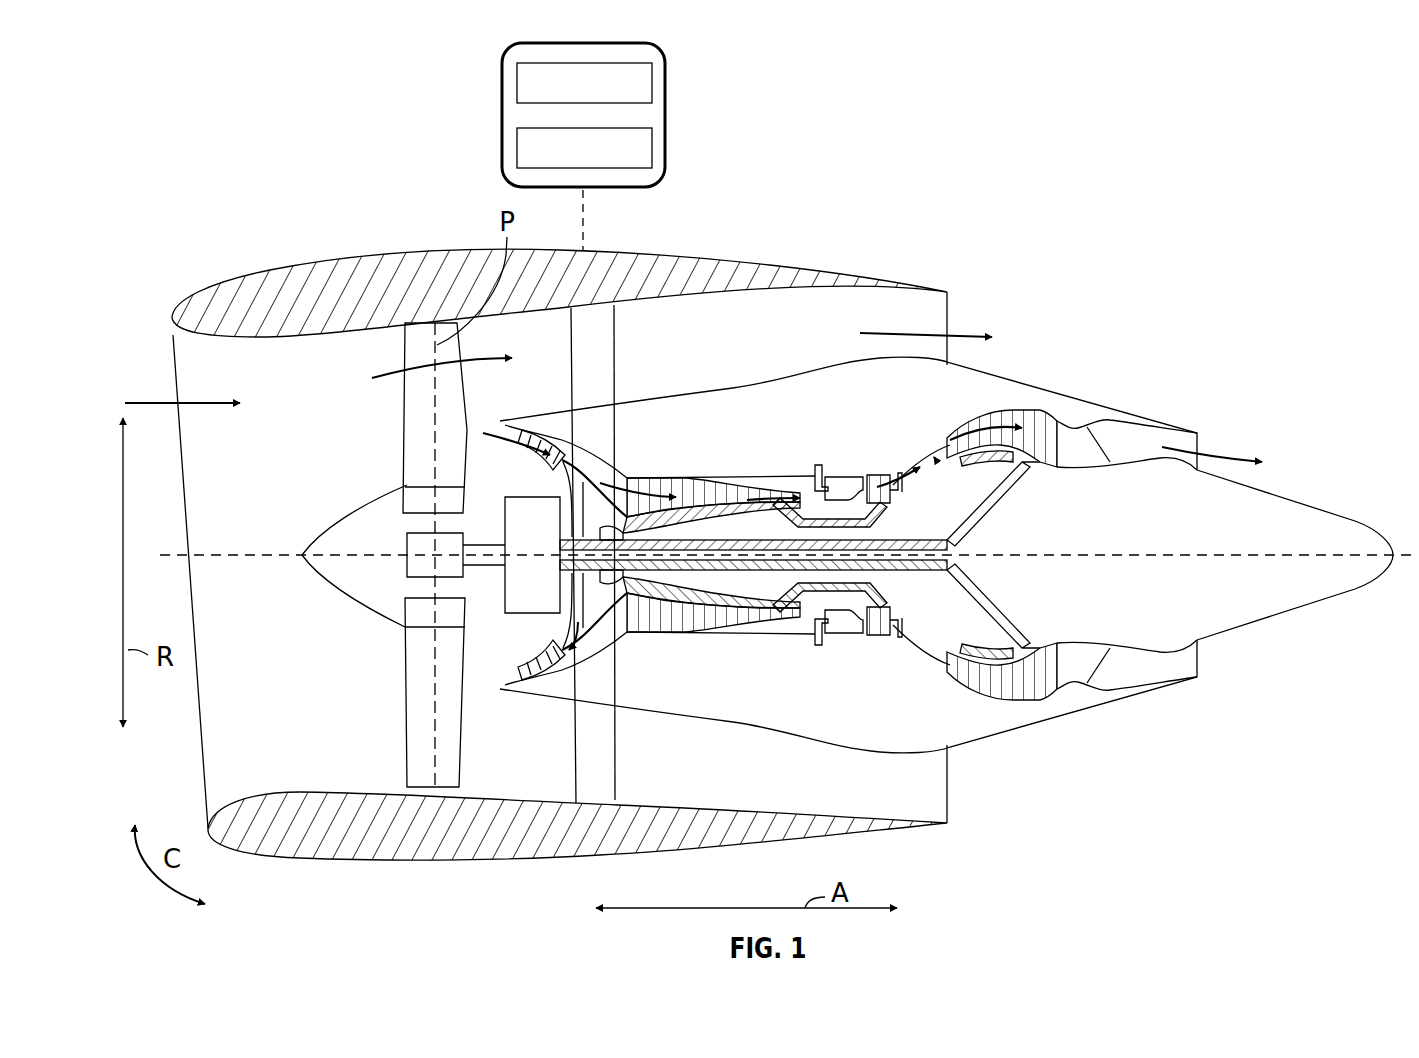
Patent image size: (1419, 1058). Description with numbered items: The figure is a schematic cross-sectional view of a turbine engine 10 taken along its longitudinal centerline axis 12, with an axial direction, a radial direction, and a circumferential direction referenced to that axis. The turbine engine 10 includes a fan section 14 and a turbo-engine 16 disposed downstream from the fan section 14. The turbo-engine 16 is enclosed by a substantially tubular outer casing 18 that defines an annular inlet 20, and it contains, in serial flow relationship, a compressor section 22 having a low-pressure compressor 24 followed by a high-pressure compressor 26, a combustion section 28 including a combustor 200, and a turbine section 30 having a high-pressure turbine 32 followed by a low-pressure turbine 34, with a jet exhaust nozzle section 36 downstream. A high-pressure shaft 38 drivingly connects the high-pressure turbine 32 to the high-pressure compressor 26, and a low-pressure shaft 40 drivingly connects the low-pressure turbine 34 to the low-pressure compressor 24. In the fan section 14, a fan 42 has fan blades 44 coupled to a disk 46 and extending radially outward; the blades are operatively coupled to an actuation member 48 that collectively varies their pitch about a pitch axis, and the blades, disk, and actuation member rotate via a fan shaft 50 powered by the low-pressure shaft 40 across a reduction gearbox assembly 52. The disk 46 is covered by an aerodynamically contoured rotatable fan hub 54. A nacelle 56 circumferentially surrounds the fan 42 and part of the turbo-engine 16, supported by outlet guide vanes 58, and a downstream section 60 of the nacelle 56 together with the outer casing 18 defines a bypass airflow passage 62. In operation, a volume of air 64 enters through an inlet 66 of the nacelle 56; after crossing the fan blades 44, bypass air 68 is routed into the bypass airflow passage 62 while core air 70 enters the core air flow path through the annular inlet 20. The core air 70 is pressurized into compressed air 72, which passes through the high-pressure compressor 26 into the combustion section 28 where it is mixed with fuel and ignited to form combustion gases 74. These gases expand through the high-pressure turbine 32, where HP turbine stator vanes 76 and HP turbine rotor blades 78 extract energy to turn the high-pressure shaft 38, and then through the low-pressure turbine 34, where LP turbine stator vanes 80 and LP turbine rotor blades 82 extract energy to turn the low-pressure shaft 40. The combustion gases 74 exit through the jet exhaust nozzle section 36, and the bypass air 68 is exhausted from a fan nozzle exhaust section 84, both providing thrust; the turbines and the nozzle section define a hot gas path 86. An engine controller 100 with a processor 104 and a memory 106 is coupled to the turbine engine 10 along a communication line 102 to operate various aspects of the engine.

The turbine engine 10 is at (252, 205).
The longitudinal centerline axis 12 is at (1195, 553).
The fan section 14 is at (372, 340).
The turbo-engine 16 is at (822, 733).
The outer casing 18 is at (787, 737).
The annular inlet 20 is at (508, 678).
The compressor section 22 is at (700, 425).
The low-pressure compressor 24 is at (560, 623).
The high-pressure compressor 26 is at (648, 628).
The combustion section 28 is at (837, 632).
The turbine section 30 is at (935, 408).
The high-pressure turbine 32 is at (915, 633).
The low-pressure turbine 34 is at (1035, 710).
The jet exhaust nozzle section 36 is at (1115, 684).
The high-pressure shaft 38 is at (777, 500).
The low-pressure shaft 40 is at (985, 512).
The fan 42 is at (296, 678).
The fan blades 44 is at (400, 695).
The disk 46 is at (408, 497).
The actuation member 48 is at (407, 558).
The fan shaft 50 is at (472, 542).
The gearbox assembly 52 is at (518, 500).
The fan hub 54 is at (332, 590).
The nacelle 56 is at (420, 868).
The outlet guide vanes 58 is at (616, 375).
The downstream section 60 is at (823, 272).
The bypass airflow passage 62 is at (729, 351).
The volume of air 64 is at (215, 405).
The inlet 66 is at (200, 755).
The bypass air 68 is at (378, 380).
The core air 70 is at (497, 430).
The compressed air 72 is at (675, 493).
The combustion gases 74 is at (993, 420).
The HP turbine stator vanes 76 is at (870, 638).
The HP turbine rotor blades 78 is at (885, 610).
The LP turbine stator vanes 80 is at (957, 660).
The LP turbine rotor blades 82 is at (967, 677).
The fan nozzle exhaust section 84 is at (950, 318).
The hot gas path 86 is at (943, 470).
The engine controller 100 is at (500, 115).
The communication line 102 is at (586, 205).
The processor 104 is at (652, 148).
The memory 106 is at (652, 83).
The combustor 200 is at (830, 482).